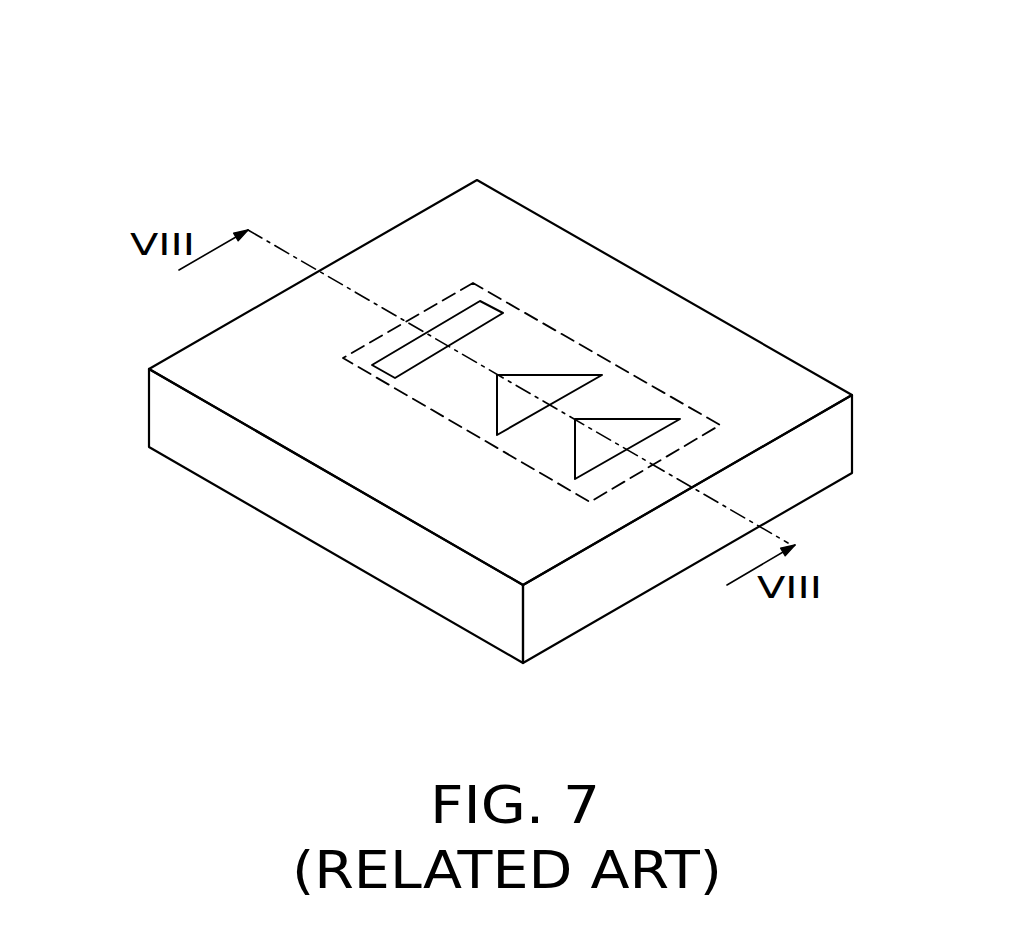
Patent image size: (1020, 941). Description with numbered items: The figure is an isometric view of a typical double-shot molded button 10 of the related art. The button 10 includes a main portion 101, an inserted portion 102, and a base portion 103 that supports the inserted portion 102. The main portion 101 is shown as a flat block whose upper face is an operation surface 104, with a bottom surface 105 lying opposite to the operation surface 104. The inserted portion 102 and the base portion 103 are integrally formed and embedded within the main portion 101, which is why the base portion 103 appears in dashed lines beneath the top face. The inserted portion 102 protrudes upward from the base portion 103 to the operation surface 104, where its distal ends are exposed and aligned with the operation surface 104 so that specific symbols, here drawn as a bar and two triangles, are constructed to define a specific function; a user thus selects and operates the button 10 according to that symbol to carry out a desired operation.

The double-shot molded button 10 is at (462, 39).
The main portion 101 is at (838, 442).
The inserted portion 102 is at (623, 428).
The base portion 103 is at (450, 295).
The operation surface 104 is at (222, 358).
The bottom surface 105 is at (210, 482).